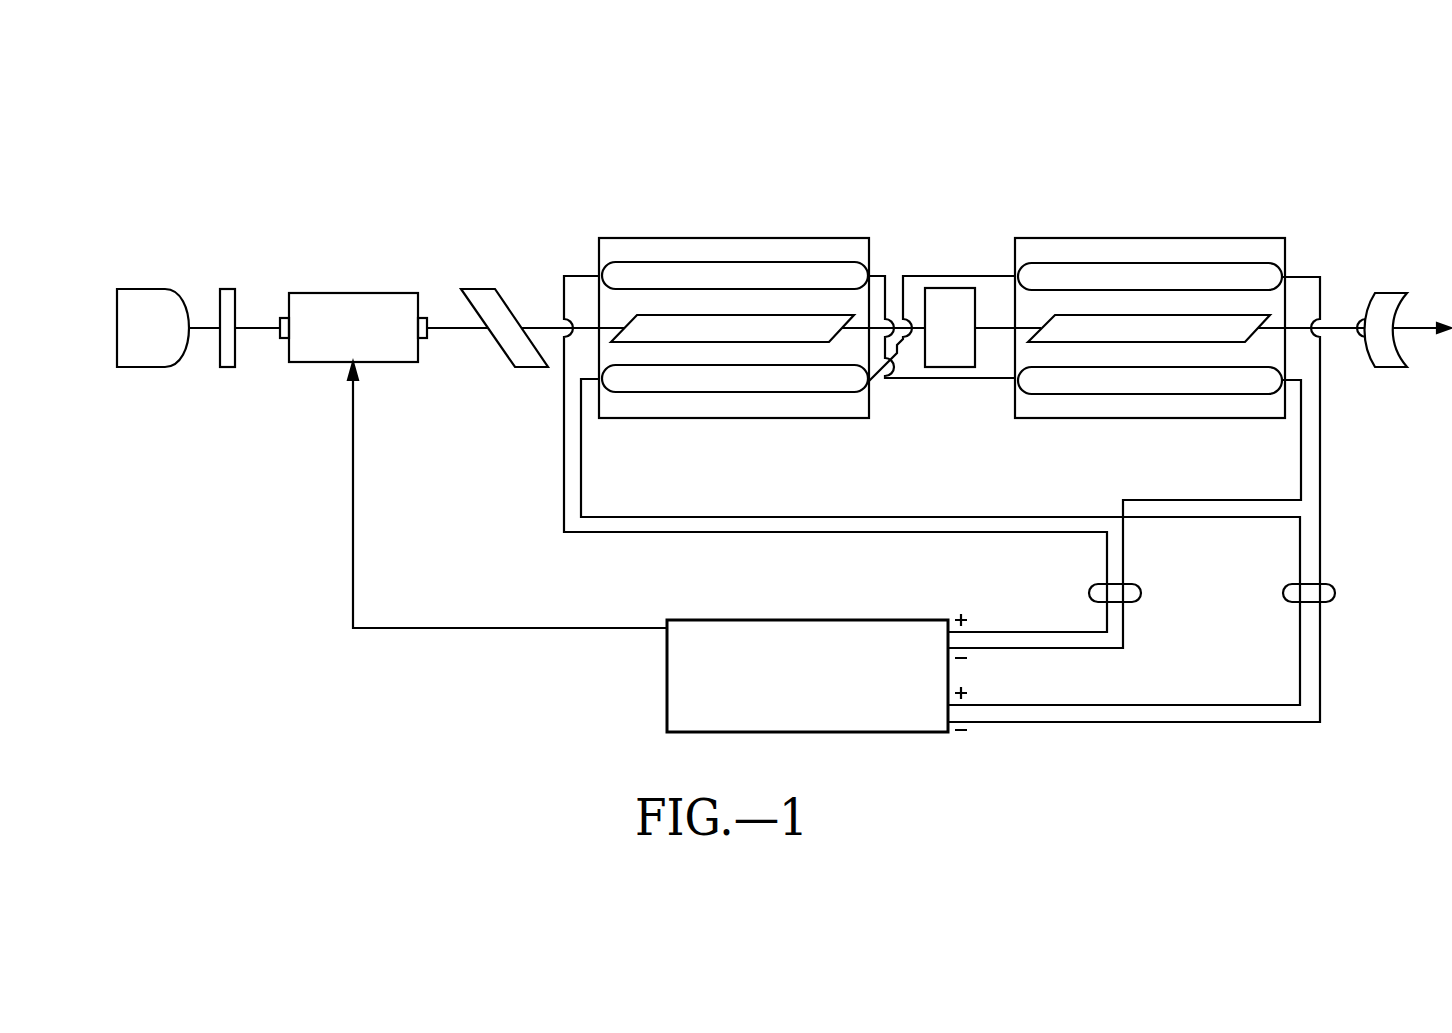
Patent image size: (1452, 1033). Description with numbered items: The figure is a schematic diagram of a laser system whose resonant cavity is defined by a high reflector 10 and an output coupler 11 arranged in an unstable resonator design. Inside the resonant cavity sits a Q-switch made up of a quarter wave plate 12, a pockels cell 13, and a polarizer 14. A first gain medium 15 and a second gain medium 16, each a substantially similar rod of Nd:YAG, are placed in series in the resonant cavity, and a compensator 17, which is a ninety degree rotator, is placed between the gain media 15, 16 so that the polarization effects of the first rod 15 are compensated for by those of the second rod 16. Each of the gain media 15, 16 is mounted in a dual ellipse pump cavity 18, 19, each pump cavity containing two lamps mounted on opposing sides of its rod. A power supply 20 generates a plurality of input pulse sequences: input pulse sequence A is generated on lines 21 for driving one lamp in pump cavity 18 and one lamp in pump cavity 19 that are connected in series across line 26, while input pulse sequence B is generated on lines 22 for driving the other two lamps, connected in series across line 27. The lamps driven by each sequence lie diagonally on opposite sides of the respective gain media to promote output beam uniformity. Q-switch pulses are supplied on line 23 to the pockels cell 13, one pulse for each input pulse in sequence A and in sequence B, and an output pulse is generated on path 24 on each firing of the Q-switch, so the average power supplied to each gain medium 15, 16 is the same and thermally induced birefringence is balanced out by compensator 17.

The high reflector 10 is at (140, 289).
The output coupler 11 is at (1387, 293).
The quarter wave plate 12 is at (319, 493).
The pockels cell 13 is at (340, 293).
The polarizer 14 is at (515, 367).
The first gain medium 15 is at (784, 314).
The second gain medium 16 is at (1199, 314).
The compensator 17 is at (947, 288).
The dual ellipse pump cavity 18 is at (723, 238).
The dual ellipse pump cavity 19 is at (1197, 238).
The power supply 20 is at (812, 620).
The lines 21 is at (1141, 593).
The lines 22 is at (1335, 593).
The line 23 is at (617, 628).
The path 24 is at (1420, 322).
The line 26 is at (877, 272).
The line 27 is at (970, 275).